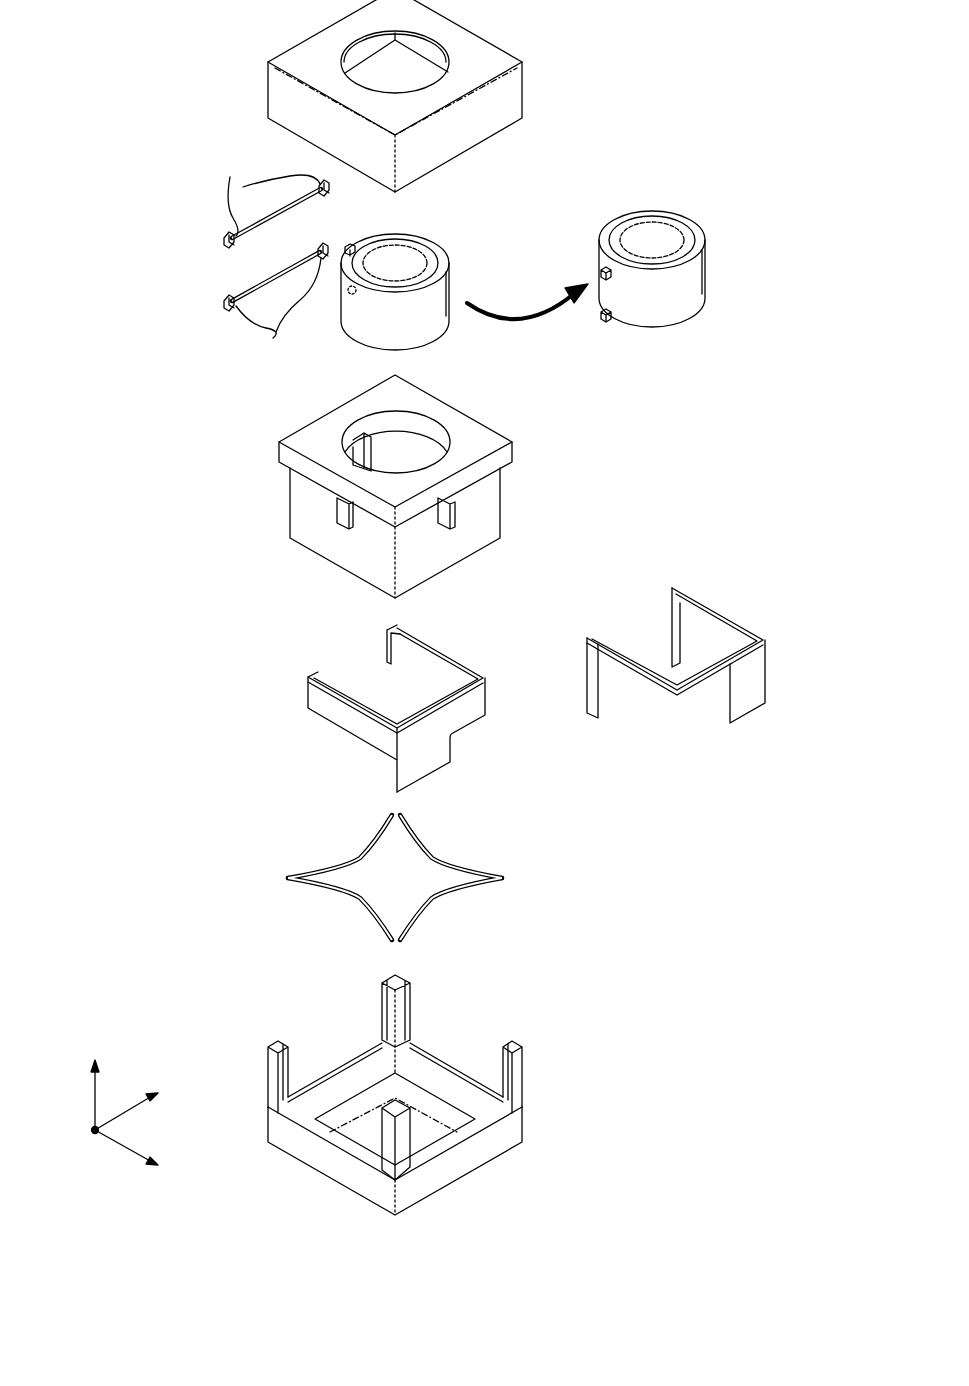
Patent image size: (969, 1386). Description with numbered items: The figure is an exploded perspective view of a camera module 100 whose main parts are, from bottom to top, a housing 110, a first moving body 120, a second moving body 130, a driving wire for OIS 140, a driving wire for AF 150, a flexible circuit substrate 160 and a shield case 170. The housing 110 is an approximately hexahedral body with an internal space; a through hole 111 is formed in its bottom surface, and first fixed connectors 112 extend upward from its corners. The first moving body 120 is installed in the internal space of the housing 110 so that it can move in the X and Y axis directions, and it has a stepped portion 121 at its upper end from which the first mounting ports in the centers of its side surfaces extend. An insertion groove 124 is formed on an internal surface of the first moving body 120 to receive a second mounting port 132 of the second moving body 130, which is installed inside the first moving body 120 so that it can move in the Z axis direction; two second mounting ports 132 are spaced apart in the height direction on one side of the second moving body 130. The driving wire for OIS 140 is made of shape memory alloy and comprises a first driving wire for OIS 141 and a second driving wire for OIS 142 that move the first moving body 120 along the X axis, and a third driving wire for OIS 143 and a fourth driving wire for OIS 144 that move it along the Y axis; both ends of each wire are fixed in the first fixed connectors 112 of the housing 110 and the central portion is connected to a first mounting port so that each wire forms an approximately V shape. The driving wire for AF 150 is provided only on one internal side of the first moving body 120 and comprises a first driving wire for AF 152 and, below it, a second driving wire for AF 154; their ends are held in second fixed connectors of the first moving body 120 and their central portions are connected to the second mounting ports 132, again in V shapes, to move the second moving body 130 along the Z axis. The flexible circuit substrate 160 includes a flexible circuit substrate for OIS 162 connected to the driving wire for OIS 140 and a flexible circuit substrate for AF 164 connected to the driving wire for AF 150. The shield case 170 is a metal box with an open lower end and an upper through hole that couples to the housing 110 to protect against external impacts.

The camera module 100 is at (199, 34).
The housing 110 is at (436, 1084).
The through hole 111 is at (425, 1145).
The first fixed connectors 112 is at (400, 975).
The first moving body 120 is at (387, 485).
The stepped portion 121 is at (318, 475).
The insertion groove 124 is at (370, 460).
The second moving body 130 is at (665, 299).
The second mounting ports 132 is at (612, 279).
The driving wire for OIS 140 is at (312, 874).
The first driving wire for OIS 141 is at (320, 893).
The second driving wire for OIS 142 is at (418, 838).
The third driving wire for OIS 143 is at (320, 866).
The fourth driving wire for OIS 144 is at (420, 925).
The driving wire for AF 150 is at (147, 252).
The first driving wire for AF 152 is at (250, 252).
The second driving wire for AF 154 is at (253, 272).
The flexible circuit substrate 160 is at (536, 721).
The flexible circuit substrate for OIS 162 is at (467, 715).
The flexible circuit substrate for AF 164 is at (692, 688).
The shield case 170 is at (515, 93).